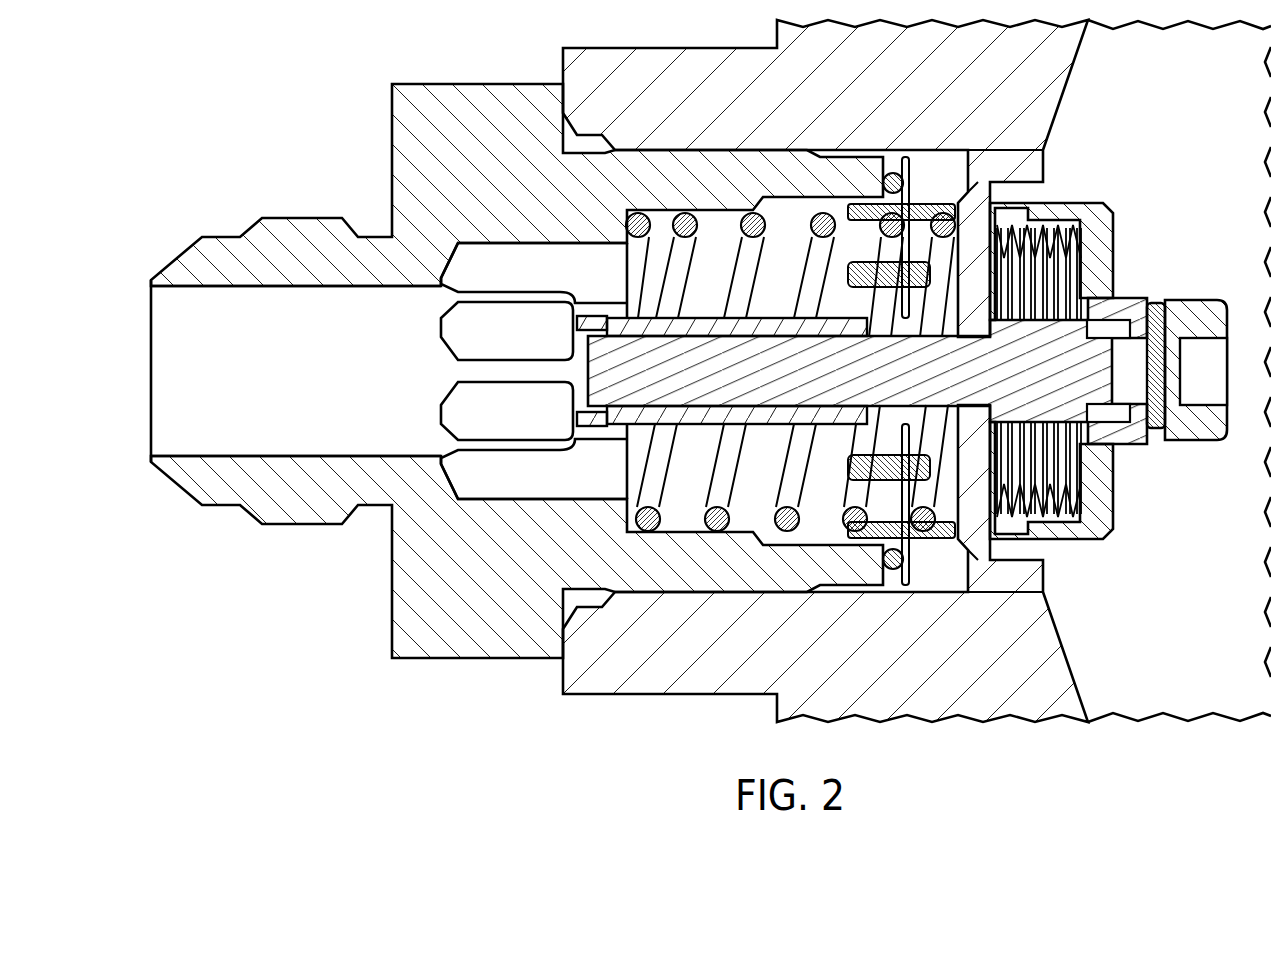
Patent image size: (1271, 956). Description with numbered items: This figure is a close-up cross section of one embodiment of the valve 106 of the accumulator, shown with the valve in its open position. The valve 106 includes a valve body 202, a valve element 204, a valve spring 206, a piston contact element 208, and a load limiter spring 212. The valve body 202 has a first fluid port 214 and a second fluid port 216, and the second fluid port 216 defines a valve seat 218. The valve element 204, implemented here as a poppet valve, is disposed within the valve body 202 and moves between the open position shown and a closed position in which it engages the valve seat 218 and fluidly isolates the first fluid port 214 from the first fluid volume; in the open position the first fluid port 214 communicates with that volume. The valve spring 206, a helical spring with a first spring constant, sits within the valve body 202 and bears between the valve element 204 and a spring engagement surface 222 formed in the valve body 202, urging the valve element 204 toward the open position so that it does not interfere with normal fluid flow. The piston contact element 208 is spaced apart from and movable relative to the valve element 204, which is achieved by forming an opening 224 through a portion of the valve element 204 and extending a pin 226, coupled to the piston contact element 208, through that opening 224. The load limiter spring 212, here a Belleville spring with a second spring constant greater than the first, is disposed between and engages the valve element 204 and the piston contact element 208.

The valve 106 is at (150, 148).
The valve body 202 is at (392, 158).
The valve element 204 is at (1040, 190).
The valve spring 206 is at (822, 217).
The piston contact element 208 is at (1100, 498).
The load limiter spring 212 is at (1070, 283).
The first fluid port 214 is at (148, 358).
The second fluid port 216 is at (905, 324).
The valve seat 218 is at (903, 178).
The spring engagement surface 222 is at (630, 217).
The opening 224 is at (1157, 435).
The pin 226 is at (1160, 312).